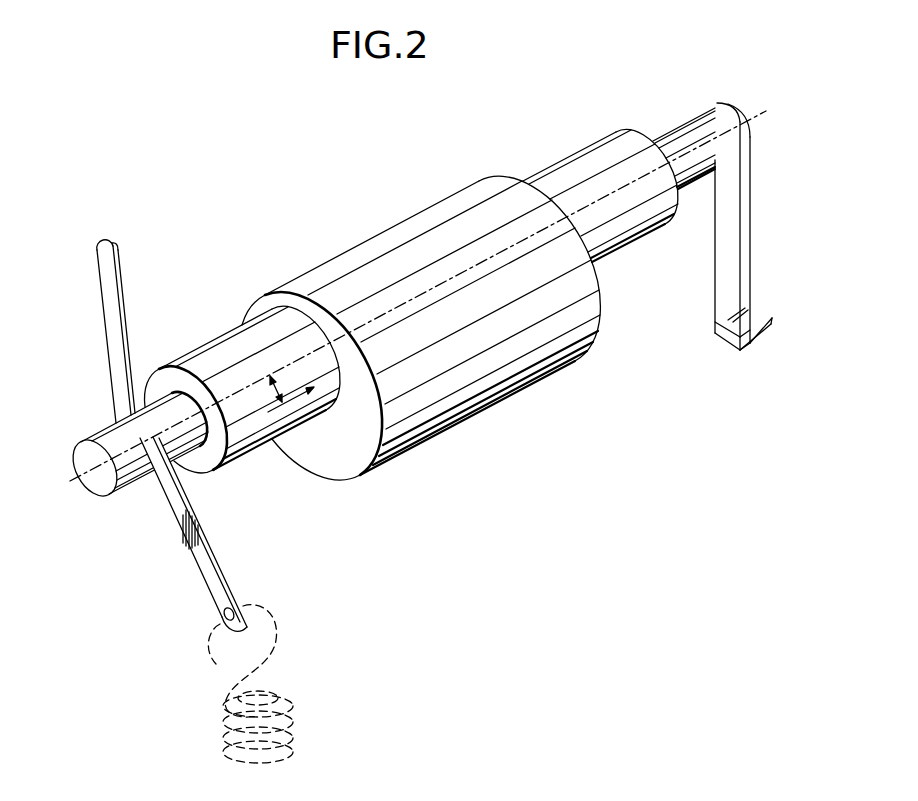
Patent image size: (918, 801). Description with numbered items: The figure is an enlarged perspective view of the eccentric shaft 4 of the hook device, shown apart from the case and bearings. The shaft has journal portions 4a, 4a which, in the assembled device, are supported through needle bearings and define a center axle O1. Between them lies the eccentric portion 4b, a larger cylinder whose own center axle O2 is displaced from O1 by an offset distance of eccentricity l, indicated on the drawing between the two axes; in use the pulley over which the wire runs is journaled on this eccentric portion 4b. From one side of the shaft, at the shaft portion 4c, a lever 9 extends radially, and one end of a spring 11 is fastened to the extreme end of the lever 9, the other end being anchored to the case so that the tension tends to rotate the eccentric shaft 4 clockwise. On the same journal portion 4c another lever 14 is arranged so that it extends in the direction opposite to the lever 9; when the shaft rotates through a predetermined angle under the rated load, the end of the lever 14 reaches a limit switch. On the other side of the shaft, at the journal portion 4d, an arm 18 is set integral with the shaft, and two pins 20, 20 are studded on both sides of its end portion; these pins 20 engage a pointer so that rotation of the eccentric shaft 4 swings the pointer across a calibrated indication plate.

The eccentric shaft 4 is at (389, 317).
The journal portion 4a is at (214, 352).
The eccentric portion 4b is at (442, 222).
The shaft portion 4c is at (130, 488).
The journal portion 4d is at (670, 140).
The lever 9 is at (205, 592).
The spring 11 is at (284, 623).
The lever 14 is at (113, 304).
The arm 18 is at (725, 298).
The pins 20 is at (746, 312).
The center axle O1 is at (96, 470).
The center axle O2 is at (277, 407).
The eccentricity l is at (280, 386).